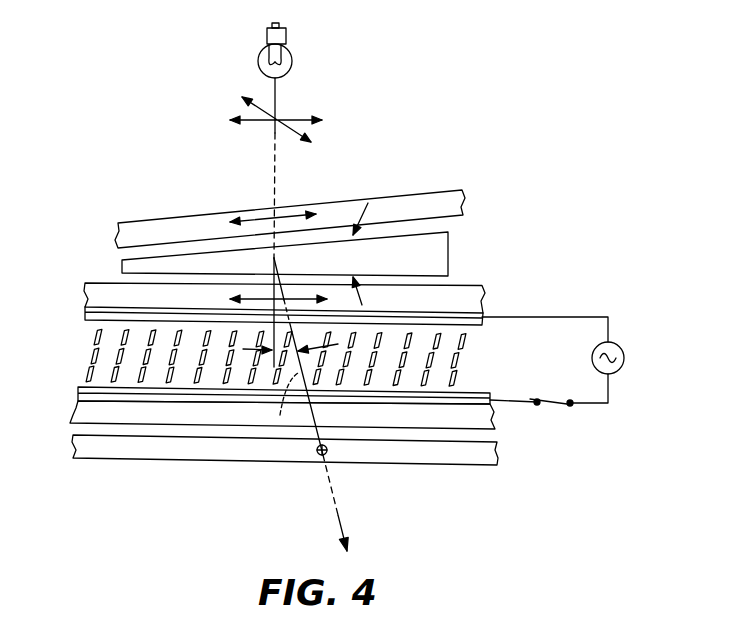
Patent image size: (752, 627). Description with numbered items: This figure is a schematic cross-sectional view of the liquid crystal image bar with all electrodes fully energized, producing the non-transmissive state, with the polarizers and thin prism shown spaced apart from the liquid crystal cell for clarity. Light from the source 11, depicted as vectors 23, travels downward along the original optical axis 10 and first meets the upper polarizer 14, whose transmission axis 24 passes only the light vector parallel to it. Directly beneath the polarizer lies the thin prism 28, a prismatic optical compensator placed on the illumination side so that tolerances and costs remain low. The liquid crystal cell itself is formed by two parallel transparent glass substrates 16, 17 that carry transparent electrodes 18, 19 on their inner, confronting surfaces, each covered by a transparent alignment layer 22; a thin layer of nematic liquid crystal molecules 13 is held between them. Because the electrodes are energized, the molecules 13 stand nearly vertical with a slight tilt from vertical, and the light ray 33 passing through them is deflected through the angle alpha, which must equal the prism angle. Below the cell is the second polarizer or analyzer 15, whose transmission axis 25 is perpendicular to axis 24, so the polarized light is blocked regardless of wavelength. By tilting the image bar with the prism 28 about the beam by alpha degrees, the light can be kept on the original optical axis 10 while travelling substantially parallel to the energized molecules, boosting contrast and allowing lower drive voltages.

The original optical axis 10 is at (271, 185).
The source 11 is at (291, 52).
The liquid crystal molecules 13 is at (87, 370).
The upper polarizer 14 is at (464, 194).
The second polarizer or analyzer 15 is at (73, 452).
The glass substrate 16 is at (87, 290).
The glass substrate 17 is at (71, 418).
The transparent electrode 18 is at (85, 315).
The transparent electrode 19 is at (79, 391).
The transparent alignment layer 22 is at (480, 326).
The light vectors 23 is at (255, 124).
The transmission axis of polarizer 24 is at (288, 216).
The transmission axis of polarizer 25 is at (318, 455).
The thin prism 28 is at (450, 246).
The light ray 33 is at (277, 400).